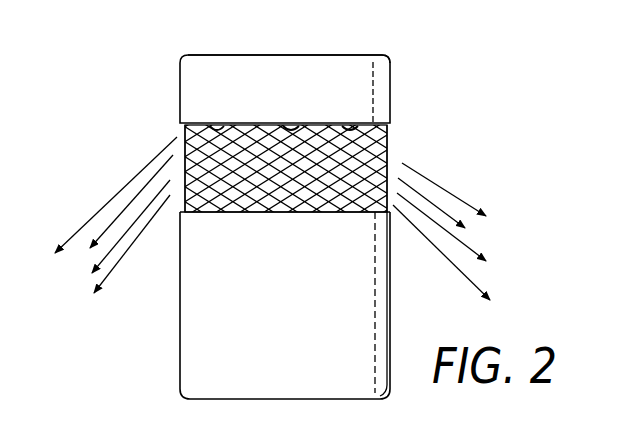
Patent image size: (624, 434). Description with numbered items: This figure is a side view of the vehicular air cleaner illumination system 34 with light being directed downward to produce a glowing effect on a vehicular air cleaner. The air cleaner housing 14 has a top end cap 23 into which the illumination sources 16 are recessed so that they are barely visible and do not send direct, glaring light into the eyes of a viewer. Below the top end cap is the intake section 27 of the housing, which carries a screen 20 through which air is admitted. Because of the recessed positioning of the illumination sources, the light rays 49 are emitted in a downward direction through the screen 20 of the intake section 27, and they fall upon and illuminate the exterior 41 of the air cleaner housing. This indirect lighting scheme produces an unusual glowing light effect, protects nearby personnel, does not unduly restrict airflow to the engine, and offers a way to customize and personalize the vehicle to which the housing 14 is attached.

The air cleaner housing 14 is at (170, 70).
The top end cap 23 is at (349, 55).
The illumination sources 16 is at (387, 147).
The screen 20 is at (388, 146).
The vehicular air cleaner illumination system 34 is at (178, 131).
The intake section 27 is at (179, 205).
The exterior 41 is at (135, 366).
The light rays 49 is at (110, 180).